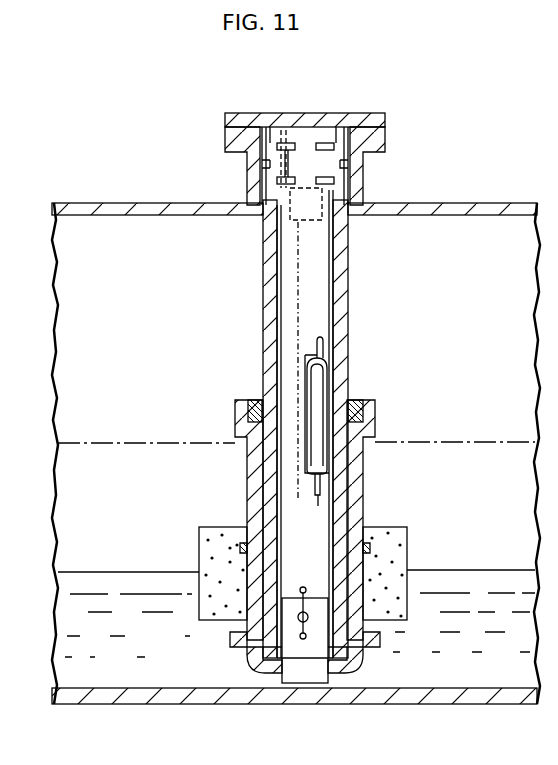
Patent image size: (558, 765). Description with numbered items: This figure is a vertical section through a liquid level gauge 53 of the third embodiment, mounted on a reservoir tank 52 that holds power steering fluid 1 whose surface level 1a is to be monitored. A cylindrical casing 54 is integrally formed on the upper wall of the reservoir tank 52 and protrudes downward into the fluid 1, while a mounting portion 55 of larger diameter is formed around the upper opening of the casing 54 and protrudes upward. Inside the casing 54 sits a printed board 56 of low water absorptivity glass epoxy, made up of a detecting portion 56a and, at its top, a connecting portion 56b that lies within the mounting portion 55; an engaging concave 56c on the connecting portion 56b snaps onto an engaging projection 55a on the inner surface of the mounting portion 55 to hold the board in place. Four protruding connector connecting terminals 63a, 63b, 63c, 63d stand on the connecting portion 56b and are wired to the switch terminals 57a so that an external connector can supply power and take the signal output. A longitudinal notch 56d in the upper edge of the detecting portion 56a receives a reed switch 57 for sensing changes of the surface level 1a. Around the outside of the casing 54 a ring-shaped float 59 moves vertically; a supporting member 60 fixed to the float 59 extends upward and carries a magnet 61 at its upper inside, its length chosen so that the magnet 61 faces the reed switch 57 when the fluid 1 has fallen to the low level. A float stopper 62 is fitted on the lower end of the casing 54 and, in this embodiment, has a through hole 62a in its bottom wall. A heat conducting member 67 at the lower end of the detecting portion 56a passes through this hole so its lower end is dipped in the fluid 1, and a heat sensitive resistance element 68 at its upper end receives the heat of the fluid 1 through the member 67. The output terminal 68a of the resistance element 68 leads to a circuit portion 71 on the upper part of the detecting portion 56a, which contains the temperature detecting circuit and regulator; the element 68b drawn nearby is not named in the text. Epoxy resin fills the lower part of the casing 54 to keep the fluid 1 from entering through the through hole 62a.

The fluid 1 is at (100, 582).
The surface level 1a is at (157, 442).
The reservoir tank 52 is at (485, 696).
The liquid level gauge 53 is at (398, 302).
The cylindrical casing 54 is at (350, 242).
The mounting portion 55 is at (367, 132).
The engaging projection 55a is at (348, 162).
The printed board 56 is at (275, 266).
The detecting portion 56a is at (288, 325).
The connecting portion 56b is at (302, 130).
The engaging concave 56c is at (262, 160).
The longitudinal notch 56d is at (306, 366).
The reed switch 57 is at (326, 385).
The terminals of the reed switch 57a is at (322, 345).
The float 59 is at (401, 537).
The supporting member 60 is at (366, 455).
The magnet 61 is at (368, 412).
The float stopper 62 is at (252, 660).
The through hole 62a is at (285, 665).
The connector connecting terminal 63a is at (272, 140).
The connector connecting terminal 63b is at (337, 140).
The connector connecting terminal 63c is at (277, 180).
The connector connecting terminal 63d is at (336, 180).
The heat conducting member 67 is at (318, 680).
The heat sensitive resistance element 68 is at (309, 620).
The output terminal 68a is at (302, 587).
The lower weight 68b is at (299, 636).
The circuit portion 71 is at (291, 224).